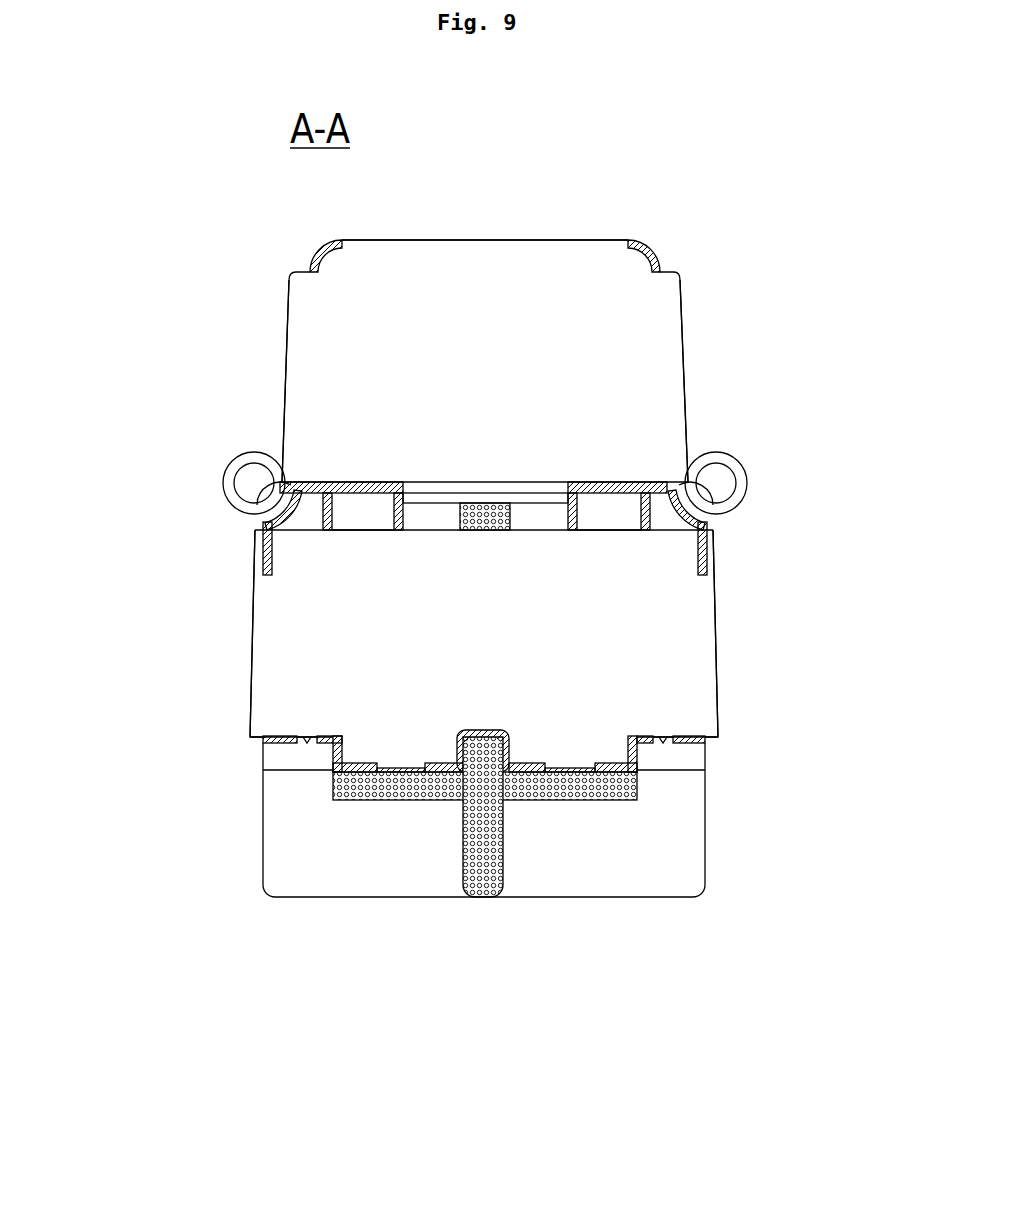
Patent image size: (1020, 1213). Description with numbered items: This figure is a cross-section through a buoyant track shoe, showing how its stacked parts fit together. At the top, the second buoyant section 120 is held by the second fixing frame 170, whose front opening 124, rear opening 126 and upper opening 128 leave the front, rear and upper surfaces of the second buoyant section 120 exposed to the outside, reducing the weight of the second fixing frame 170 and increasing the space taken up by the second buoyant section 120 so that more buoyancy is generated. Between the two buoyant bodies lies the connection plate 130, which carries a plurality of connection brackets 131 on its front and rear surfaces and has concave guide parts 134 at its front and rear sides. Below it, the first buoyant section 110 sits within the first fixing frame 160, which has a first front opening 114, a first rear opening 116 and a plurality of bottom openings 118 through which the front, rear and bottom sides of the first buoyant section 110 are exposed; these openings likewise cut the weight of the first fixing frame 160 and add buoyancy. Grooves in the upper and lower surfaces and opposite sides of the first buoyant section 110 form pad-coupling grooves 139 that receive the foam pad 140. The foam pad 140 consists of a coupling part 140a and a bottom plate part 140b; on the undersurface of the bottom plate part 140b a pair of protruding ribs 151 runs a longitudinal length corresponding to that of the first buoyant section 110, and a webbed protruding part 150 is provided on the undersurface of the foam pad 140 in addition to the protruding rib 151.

The first buoyant section 110 is at (313, 607).
The first front opening 114 is at (262, 657).
The first rear opening 116 is at (700, 640).
The bottom openings 118 is at (305, 738).
The second buoyant section 120 is at (357, 308).
The front opening 124 is at (300, 345).
The rear opening 126 is at (682, 343).
The upper opening 128 is at (487, 240).
The connection plate 130 is at (637, 484).
The connection brackets 131 is at (240, 465).
The concave guide parts 134 is at (270, 500).
The pad-coupling grooves 139 is at (490, 531).
The foam pad 140 is at (452, 800).
The coupling part 140a is at (462, 531).
The bottom plate part 140b is at (392, 800).
The webbed protruding part 150 is at (484, 897).
The protruding ribs 151 is at (672, 848).
The first fixing frame 160 is at (265, 745).
The second fixing frame 170 is at (670, 245).